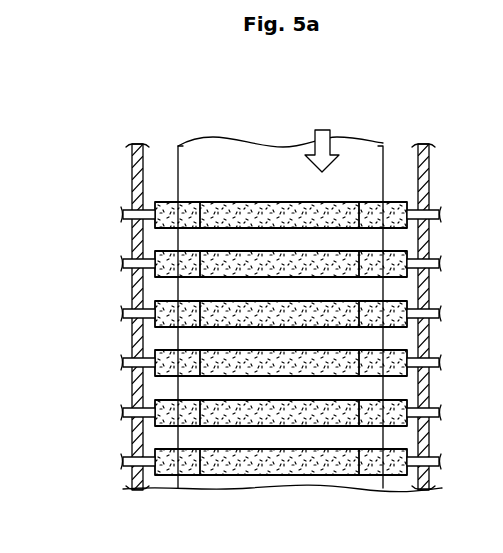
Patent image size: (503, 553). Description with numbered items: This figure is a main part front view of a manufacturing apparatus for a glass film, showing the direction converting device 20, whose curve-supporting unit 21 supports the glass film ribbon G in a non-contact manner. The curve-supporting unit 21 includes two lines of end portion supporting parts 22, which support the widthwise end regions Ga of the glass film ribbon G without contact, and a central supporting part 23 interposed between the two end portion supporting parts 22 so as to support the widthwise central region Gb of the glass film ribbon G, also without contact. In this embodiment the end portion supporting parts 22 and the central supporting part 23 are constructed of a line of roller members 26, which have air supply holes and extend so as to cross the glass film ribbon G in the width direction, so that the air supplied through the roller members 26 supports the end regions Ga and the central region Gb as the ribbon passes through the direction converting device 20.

The direction converting device 20 is at (98, 190).
The curve-supporting unit 21 is at (151, 429).
The end portion supporting part 22 is at (202, 495).
The central supporting part 23 is at (360, 495).
The roller member 26 is at (165, 222).
The widthwise end region Ga is at (190, 158).
The glass film ribbon G is at (235, 163).
The widthwise central region Gb is at (285, 158).